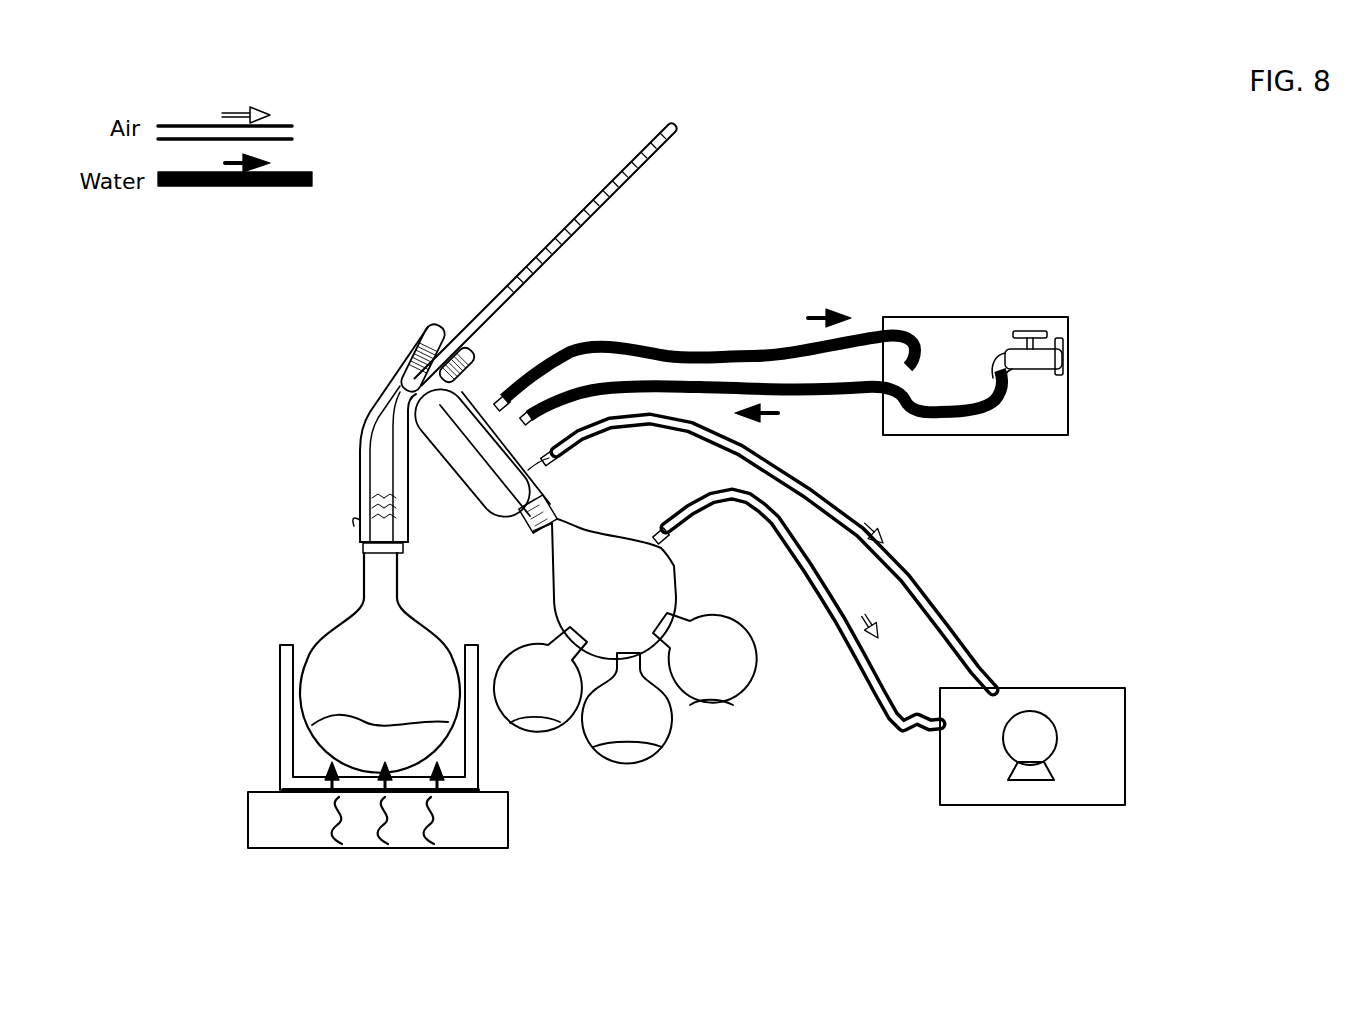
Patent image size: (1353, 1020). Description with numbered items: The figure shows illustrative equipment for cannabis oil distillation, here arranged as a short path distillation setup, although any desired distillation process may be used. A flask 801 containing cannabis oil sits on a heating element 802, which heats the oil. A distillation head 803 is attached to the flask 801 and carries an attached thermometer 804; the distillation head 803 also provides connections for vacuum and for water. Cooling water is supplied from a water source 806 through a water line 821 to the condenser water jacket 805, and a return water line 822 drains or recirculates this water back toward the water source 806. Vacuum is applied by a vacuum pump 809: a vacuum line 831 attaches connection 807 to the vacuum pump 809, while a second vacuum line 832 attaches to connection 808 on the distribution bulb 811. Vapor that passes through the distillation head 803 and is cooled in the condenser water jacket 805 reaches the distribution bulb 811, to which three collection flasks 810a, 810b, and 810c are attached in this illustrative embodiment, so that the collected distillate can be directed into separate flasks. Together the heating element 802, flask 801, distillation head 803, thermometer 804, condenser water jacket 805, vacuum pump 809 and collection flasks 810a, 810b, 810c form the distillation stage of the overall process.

The flask 801 is at (320, 632).
The heating element 802 is at (262, 792).
The distillation head 803 is at (383, 414).
The thermometer 804 is at (573, 222).
The condenser water jacket 805 is at (484, 405).
The water source 806 is at (947, 317).
The connection 807 is at (558, 470).
The connection 808 is at (656, 528).
The vacuum pump 809 is at (1024, 688).
The collection flask 810a is at (520, 728).
The collection flask 810b is at (650, 750).
The collection flask 810c is at (737, 710).
The distribution bulb 811 is at (548, 592).
The water line 821 is at (802, 393).
The return water line 822 is at (771, 343).
The vacuum line 831 is at (912, 590).
The vacuum line 832 is at (768, 530).